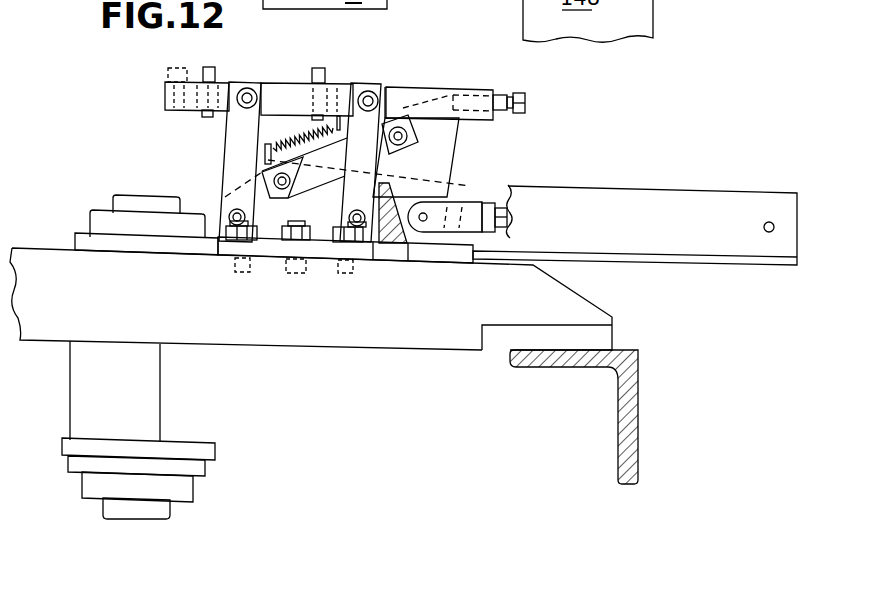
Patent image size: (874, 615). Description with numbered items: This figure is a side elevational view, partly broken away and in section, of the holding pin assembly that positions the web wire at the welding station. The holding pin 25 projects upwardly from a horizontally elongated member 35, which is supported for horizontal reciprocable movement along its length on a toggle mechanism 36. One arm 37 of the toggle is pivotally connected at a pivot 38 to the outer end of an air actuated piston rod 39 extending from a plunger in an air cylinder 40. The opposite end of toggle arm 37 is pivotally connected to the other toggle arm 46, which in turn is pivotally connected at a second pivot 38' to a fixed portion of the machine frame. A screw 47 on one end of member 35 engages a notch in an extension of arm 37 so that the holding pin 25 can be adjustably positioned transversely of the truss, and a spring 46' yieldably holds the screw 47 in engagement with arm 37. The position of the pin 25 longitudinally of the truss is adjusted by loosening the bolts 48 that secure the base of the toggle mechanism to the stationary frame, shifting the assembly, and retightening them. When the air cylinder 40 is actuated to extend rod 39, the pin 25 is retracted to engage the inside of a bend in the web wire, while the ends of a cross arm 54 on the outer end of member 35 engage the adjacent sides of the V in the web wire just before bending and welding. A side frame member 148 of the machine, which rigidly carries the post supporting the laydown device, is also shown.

The holding pin 25 is at (320, 78).
The horizontally elongated member 35 is at (288, 88).
The toggle mechanism 36 is at (461, 159).
The toggle arm 37 is at (440, 173).
The pivot 38 is at (444, 181).
The pivot 38' is at (253, 249).
The piston rod 39 is at (508, 200).
The air cylinder 40 is at (618, 192).
The toggle arm 46 is at (333, 168).
The spring 46' is at (257, 143).
The screw 47 is at (527, 104).
The bolts 48 is at (319, 266).
The cross arm 54 is at (190, 70).
The side frame member 148 is at (638, 380).